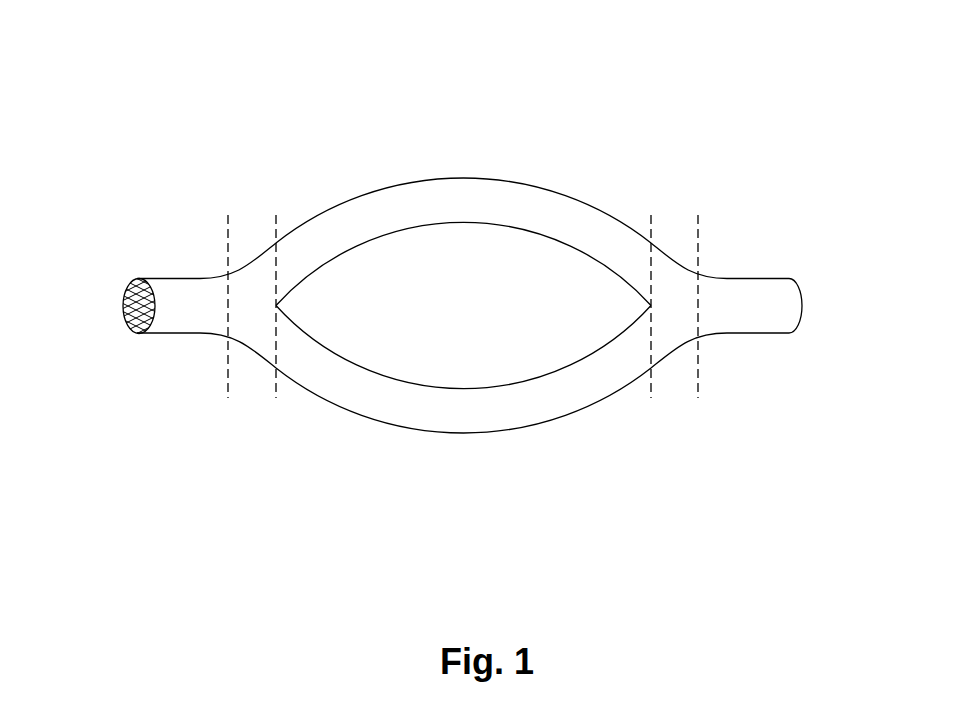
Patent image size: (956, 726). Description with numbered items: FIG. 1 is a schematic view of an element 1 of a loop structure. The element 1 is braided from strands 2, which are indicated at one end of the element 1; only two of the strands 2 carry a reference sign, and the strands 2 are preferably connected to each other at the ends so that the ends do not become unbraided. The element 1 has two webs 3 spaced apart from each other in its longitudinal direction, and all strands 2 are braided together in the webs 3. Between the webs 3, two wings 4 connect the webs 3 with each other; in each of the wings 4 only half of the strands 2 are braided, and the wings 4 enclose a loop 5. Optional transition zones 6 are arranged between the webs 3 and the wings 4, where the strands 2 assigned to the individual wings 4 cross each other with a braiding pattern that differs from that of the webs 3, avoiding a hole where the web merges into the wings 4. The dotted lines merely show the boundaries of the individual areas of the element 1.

The element 1 is at (193, 108).
The strands 2 is at (130, 290).
The webs 3 is at (183, 315).
The wings 4 is at (450, 202).
The loop 5 is at (479, 320).
The transition zones 6 is at (248, 288).